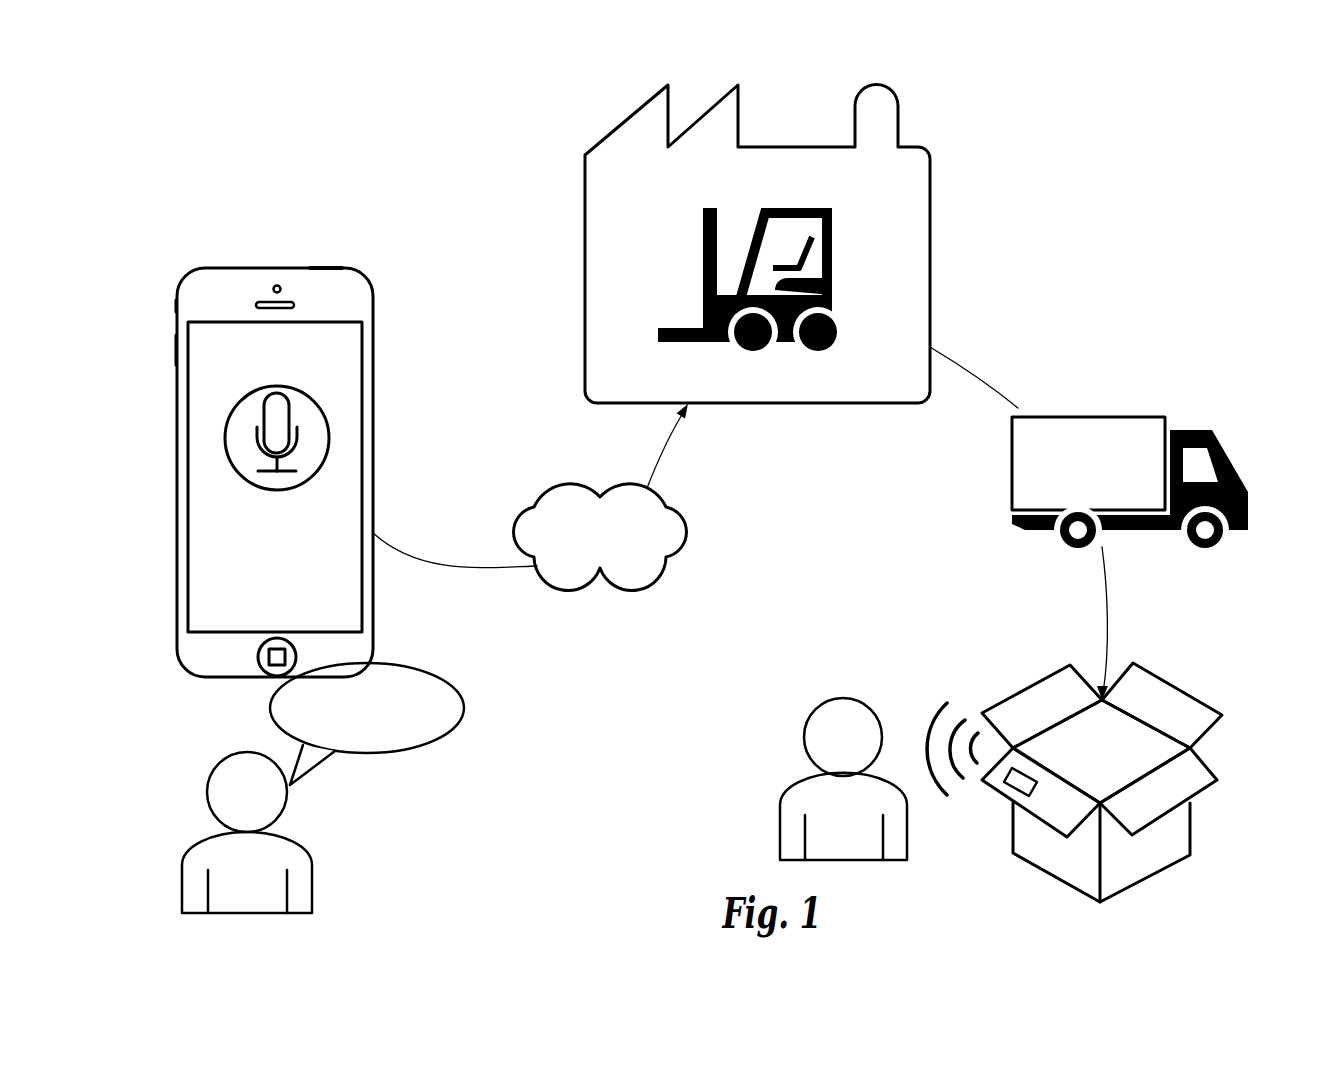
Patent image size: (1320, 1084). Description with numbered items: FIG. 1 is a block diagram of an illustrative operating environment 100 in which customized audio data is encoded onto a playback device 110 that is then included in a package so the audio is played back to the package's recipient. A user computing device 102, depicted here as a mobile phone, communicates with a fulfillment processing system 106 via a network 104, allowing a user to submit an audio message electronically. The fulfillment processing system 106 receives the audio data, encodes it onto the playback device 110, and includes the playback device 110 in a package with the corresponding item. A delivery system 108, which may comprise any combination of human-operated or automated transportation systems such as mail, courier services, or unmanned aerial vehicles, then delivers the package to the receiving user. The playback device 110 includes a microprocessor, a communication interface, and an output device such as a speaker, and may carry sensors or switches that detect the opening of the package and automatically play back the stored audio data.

The operating environment 100 is at (246, 126).
The user computing device 102 is at (240, 268).
The network 104 is at (568, 485).
The fulfillment processing system 106 is at (585, 187).
The delivery system 108 is at (1012, 467).
The playback device 110 is at (1004, 784).